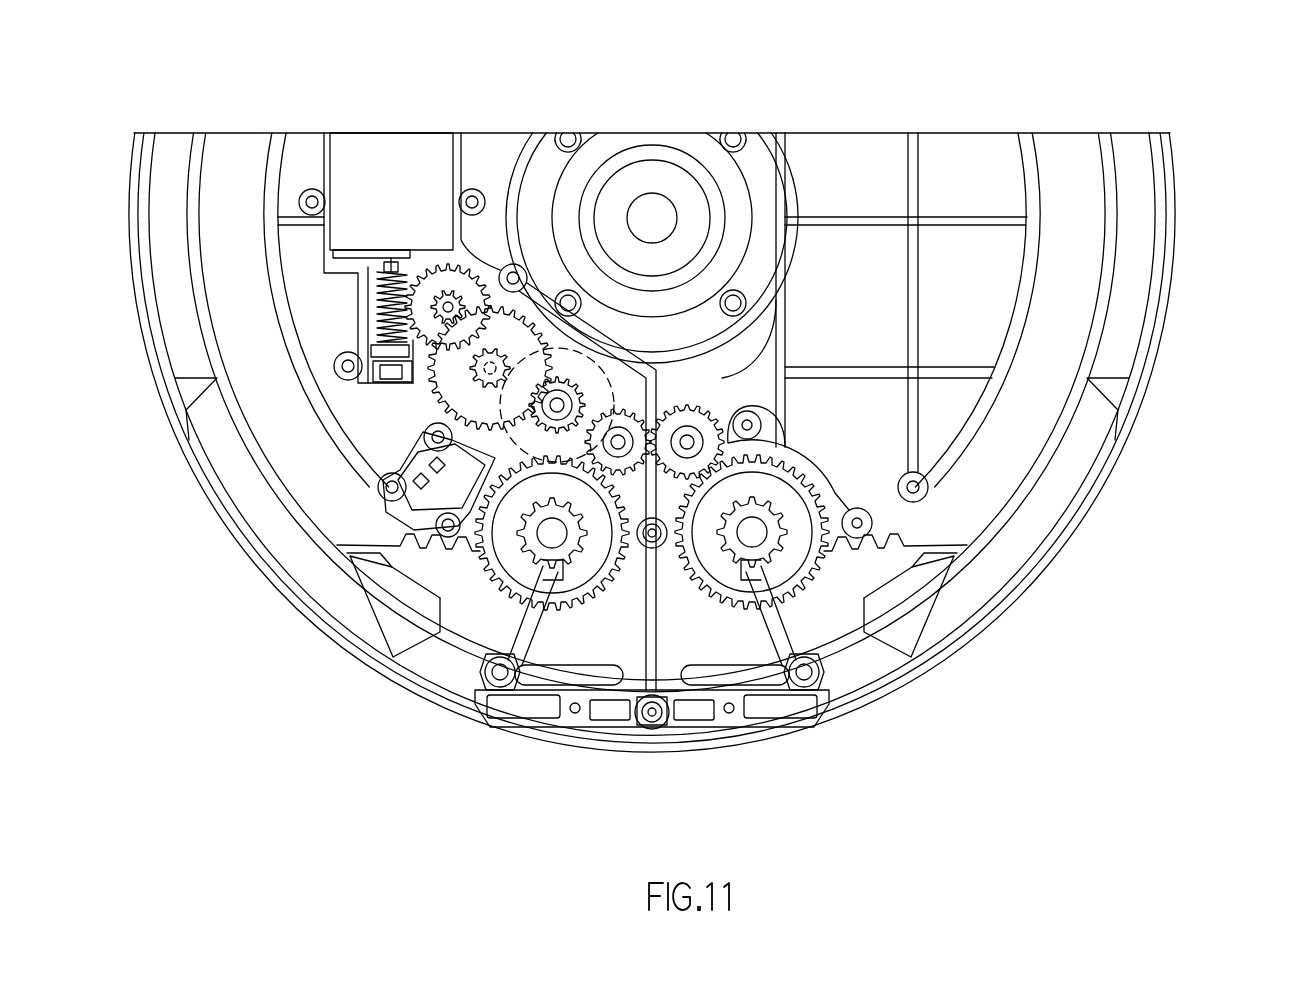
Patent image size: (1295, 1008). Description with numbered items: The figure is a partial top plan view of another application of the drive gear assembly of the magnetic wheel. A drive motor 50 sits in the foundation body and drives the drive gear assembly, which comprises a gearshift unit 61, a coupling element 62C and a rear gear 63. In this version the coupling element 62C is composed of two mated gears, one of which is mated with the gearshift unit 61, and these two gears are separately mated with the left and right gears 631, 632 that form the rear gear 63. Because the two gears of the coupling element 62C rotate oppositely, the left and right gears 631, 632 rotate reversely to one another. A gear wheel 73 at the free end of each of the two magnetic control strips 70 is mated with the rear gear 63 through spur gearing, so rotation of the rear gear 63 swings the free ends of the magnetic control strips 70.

The drive motor 50 is at (388, 190).
The gearshift unit 61 is at (423, 419).
The coupling element 62C is at (632, 418).
The rear gear 63 is at (652, 654).
The left gear 631 is at (612, 598).
The right gear 632 is at (693, 598).
The magnetic control strip 70 is at (198, 296).
The gear wheel 73 is at (542, 563).